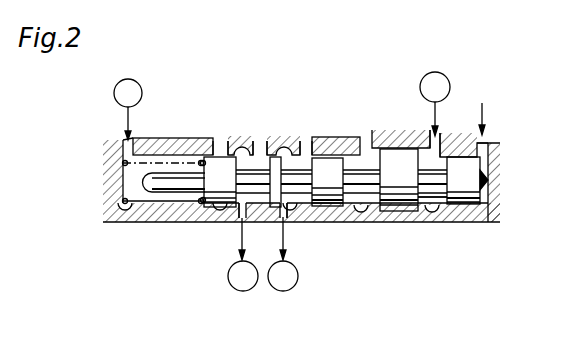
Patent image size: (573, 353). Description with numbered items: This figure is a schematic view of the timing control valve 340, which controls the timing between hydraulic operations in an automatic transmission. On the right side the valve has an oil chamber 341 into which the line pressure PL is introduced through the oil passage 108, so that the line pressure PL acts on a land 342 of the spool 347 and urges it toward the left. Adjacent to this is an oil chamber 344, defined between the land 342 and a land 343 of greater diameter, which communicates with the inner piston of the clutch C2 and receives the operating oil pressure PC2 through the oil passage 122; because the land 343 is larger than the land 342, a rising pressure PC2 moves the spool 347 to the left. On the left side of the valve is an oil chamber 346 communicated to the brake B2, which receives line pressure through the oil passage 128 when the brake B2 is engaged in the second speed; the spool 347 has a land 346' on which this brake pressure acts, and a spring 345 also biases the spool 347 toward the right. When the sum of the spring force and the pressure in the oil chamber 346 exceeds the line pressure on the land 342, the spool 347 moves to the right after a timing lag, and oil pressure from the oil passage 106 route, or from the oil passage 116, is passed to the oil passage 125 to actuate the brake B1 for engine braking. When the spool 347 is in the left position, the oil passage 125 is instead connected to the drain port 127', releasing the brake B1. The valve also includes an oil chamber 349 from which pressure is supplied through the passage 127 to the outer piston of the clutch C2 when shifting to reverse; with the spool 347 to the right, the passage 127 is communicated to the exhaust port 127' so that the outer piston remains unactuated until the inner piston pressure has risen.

The timing control valve 340 is at (125, 212).
The oil chamber 341 is at (481, 207).
The land 342 is at (461, 190).
The land 343 is at (303, 210).
The oil chamber 344 is at (416, 204).
The spring 345 is at (152, 203).
The oil chamber 346 is at (163, 133).
The land 346' is at (214, 206).
The spool 347 is at (176, 190).
The oil chamber 349 is at (263, 203).
The oil passage 106 is at (224, 138).
The oil passage 108 is at (484, 113).
The oil passage 116 is at (306, 137).
The oil passage 122 is at (422, 98).
The oil passage 125 is at (288, 242).
The passage 127 is at (209, 264).
The exhaust port 127' is at (272, 118).
The oil passage 128 is at (126, 113).
The brake B1 is at (282, 291).
The brake B2 is at (114, 88).
The clutch C2 is at (448, 76).
The operating oil pressure PC2 is at (435, 110).
The line pressure PL is at (478, 109).